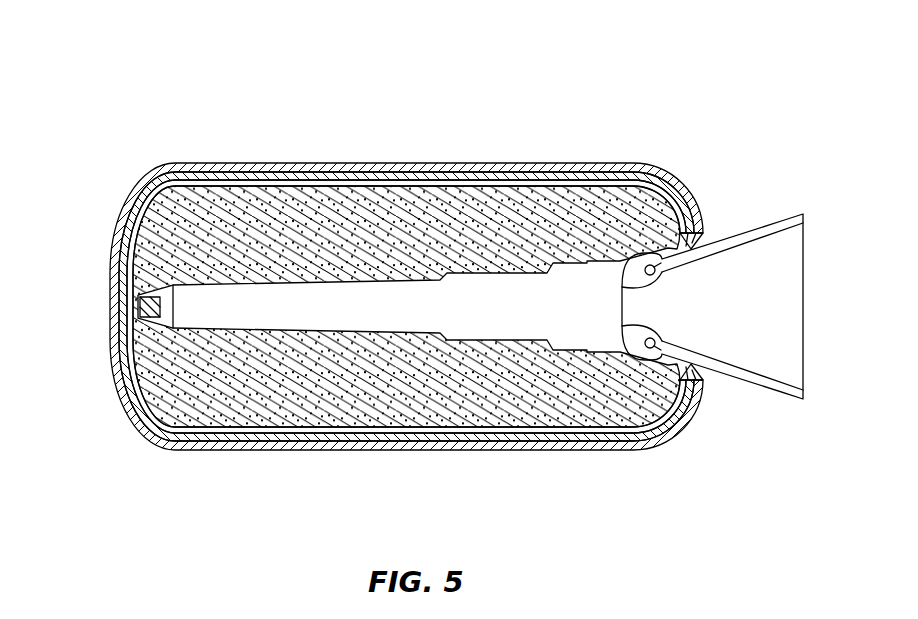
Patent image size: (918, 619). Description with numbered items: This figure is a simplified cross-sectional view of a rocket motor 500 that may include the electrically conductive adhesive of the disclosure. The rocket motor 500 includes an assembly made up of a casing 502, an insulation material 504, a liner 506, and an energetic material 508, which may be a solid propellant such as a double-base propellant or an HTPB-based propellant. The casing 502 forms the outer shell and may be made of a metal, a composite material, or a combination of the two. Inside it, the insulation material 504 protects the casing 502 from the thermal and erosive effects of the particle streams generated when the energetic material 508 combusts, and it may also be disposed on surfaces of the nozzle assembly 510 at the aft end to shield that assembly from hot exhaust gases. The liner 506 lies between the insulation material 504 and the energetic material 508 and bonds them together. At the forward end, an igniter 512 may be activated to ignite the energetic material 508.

The rocket motor 500 is at (494, 122).
The casing 502 is at (183, 167).
The insulation material 504 is at (278, 176).
The liner 506 is at (338, 181).
The energetic material 508 is at (460, 408).
The nozzle assembly 510 is at (755, 228).
The igniter 512 is at (140, 303).